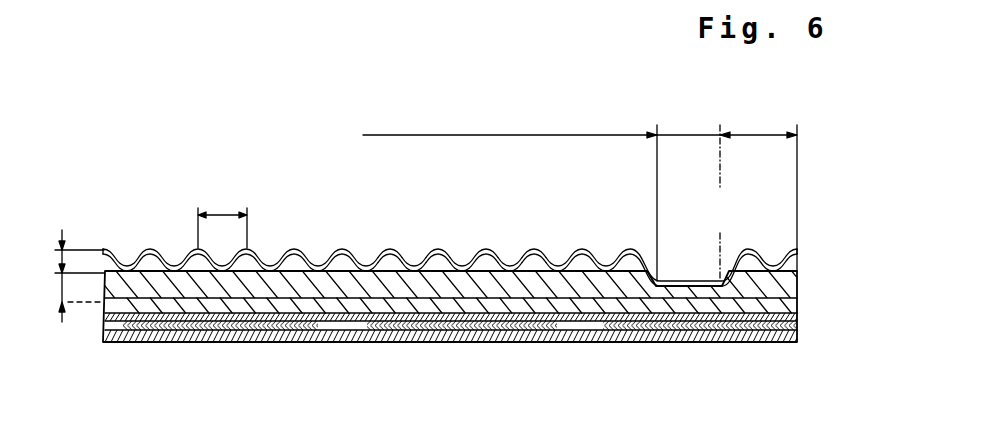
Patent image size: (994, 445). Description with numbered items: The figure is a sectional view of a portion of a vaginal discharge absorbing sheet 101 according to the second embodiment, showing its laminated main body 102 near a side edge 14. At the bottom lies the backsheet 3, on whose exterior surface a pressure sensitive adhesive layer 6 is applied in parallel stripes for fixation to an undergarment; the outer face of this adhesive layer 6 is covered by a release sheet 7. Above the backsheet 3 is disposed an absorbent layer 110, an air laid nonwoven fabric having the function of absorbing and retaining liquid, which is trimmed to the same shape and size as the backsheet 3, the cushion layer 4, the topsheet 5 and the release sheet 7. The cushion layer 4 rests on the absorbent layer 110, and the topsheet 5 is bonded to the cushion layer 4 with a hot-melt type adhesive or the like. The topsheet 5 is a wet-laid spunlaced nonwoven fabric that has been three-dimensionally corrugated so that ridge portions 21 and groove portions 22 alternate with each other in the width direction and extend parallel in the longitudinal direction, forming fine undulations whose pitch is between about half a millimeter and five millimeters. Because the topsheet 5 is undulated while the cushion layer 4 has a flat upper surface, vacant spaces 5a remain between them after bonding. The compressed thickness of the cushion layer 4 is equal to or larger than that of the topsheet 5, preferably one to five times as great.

The absorbing sheet 101 is at (284, 179).
The main body 102 is at (810, 247).
The backsheet 3 is at (225, 332).
The cushion layer 4 is at (452, 283).
The topsheet 5 is at (301, 249).
The vacant spaces 5a is at (253, 257).
The pressure sensitive adhesive layer 6 is at (407, 343).
The release sheet 7 is at (531, 343).
The side edge 14 is at (800, 320).
The ridge portions 21 is at (391, 250).
The groove portions 22 is at (414, 266).
The absorbent layer 110 is at (353, 310).